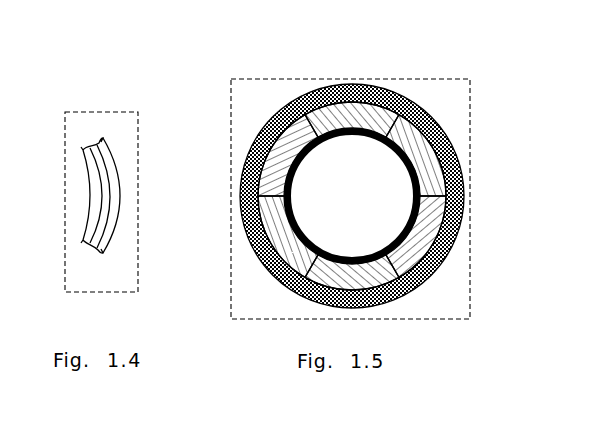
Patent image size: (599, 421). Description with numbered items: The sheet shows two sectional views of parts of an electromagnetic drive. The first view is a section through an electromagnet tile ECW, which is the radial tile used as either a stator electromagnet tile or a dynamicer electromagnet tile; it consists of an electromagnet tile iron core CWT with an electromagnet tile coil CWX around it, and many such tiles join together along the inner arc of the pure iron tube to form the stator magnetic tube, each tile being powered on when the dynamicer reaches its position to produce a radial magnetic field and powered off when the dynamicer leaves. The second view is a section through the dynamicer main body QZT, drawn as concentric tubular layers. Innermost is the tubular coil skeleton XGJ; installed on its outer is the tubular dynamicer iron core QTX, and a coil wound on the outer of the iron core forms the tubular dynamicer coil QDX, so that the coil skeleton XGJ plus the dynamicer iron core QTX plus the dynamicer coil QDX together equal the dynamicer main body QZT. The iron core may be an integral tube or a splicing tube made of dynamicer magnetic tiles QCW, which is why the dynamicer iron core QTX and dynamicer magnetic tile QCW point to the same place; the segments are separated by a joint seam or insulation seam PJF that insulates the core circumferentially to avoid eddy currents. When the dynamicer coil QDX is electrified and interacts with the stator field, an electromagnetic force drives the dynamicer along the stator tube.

In FIG. 1.4, the electromagnet tile iron core CWT is at (100, 168).
In FIG. 1.4, the electromagnet tile coil CWX is at (112, 158).
In FIG. 1.4, the electromagnet tile ECW is at (67, 272).
In FIG. 1.5, the insulation seam PJF is at (283, 107).
In FIG. 1.5, the dynamicer magnetic tile QCW is at (339, 156).
In FIG. 1.5, the dynamicer iron core QTX is at (318, 105).
In FIG. 1.5, the dynamicer coil QDX is at (339, 156).
In FIG. 1.5, the coil skeleton XGJ is at (380, 130).
In FIG. 1.5, the dynamicer main body QZT is at (423, 78).